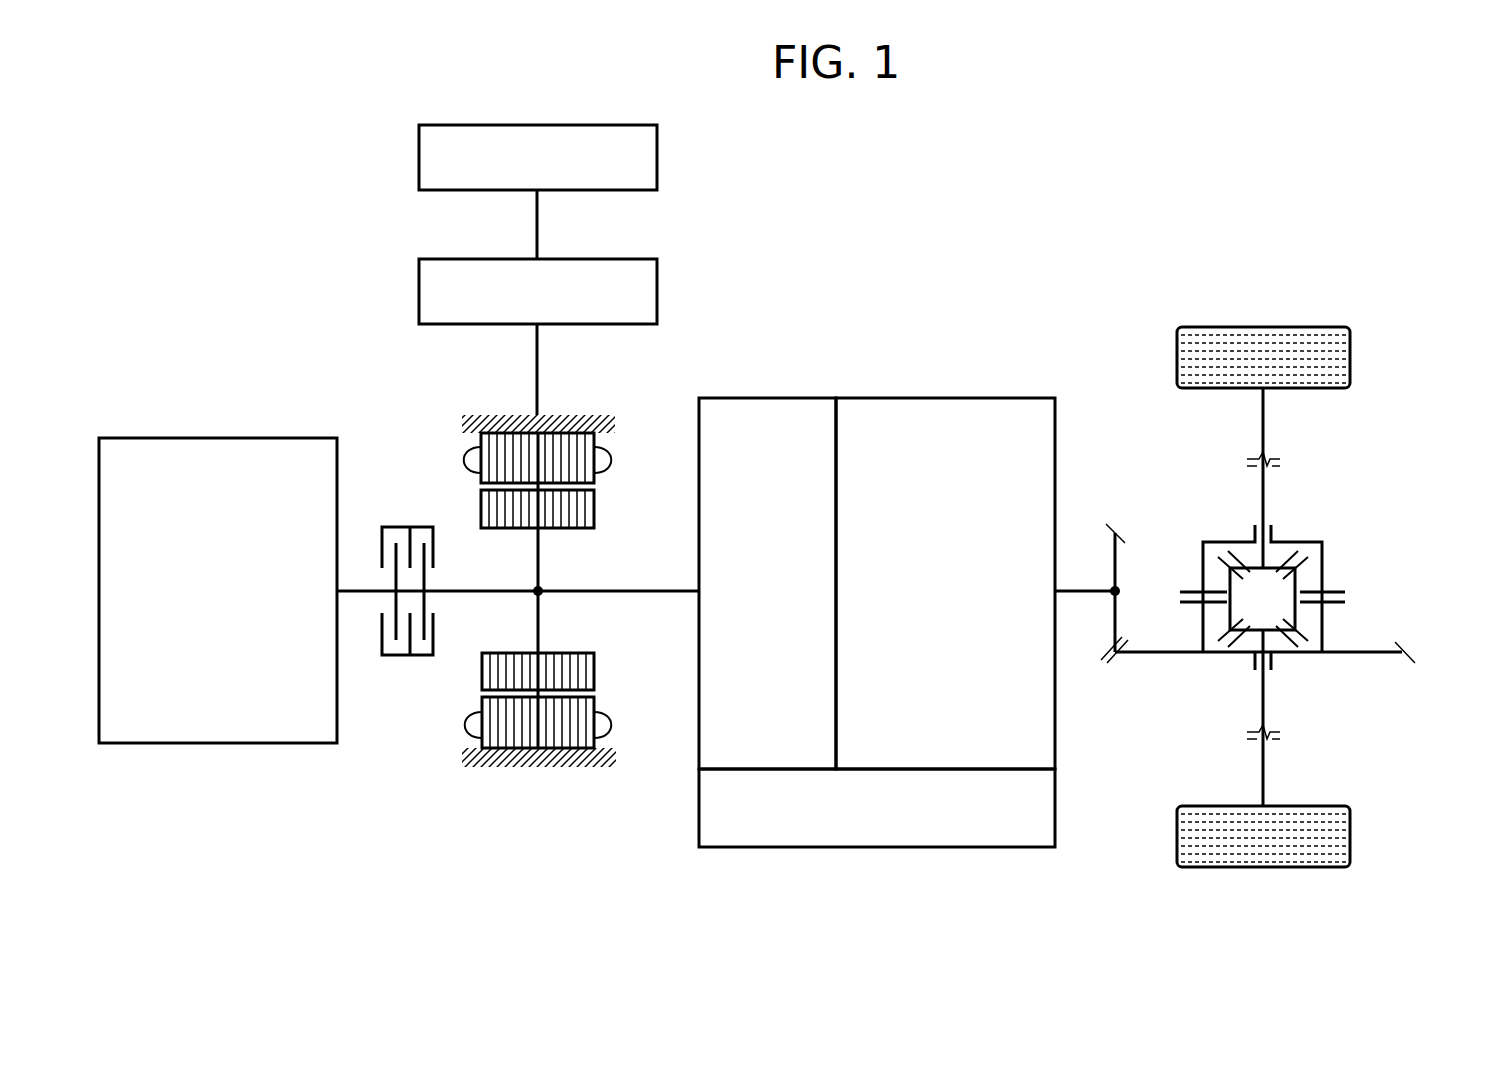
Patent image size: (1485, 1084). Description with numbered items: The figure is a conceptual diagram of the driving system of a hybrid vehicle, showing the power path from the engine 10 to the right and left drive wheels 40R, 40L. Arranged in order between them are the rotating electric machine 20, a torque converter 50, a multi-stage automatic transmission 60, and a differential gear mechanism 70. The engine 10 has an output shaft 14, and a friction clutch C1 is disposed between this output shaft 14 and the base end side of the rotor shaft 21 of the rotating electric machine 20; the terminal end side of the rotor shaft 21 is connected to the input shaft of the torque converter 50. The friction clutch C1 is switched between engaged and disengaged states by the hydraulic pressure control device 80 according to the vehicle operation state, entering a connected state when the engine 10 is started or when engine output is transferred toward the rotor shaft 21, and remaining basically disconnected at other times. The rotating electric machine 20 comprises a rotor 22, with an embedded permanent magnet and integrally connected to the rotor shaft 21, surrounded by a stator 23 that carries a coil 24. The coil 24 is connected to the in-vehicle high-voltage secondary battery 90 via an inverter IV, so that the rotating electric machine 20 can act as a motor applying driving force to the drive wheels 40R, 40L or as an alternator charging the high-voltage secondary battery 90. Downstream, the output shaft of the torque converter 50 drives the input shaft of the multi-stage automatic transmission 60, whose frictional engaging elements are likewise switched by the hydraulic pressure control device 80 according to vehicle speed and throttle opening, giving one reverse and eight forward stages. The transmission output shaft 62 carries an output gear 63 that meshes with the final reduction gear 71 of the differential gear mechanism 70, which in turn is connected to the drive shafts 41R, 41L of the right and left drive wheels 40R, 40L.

The engine 10 is at (255, 439).
The output shaft 14 is at (365, 593).
The friction clutch C1 is at (396, 512).
The rotating electric machine 20 is at (531, 623).
The rotor shaft 21 is at (568, 590).
The rotor 22 is at (595, 653).
The stator 23 is at (597, 698).
The coil 24 is at (613, 460).
The torque converter 50 is at (737, 398).
The multi-stage automatic transmission 60 is at (923, 398).
The output shaft 62 is at (1083, 594).
The output gear 63 is at (1115, 532).
The differential gear mechanism 70 is at (1356, 553).
The final reduction gear 71 is at (1407, 648).
The hydraulic pressure control device 80 is at (970, 840).
The high-voltage secondary battery 90 is at (658, 152).
The inverter IV is at (658, 290).
The right drive wheel 40R is at (1265, 325).
The left drive wheel 40L is at (1228, 868).
The right drive shaft 41R is at (1265, 500).
The left drive shaft 41L is at (1267, 700).